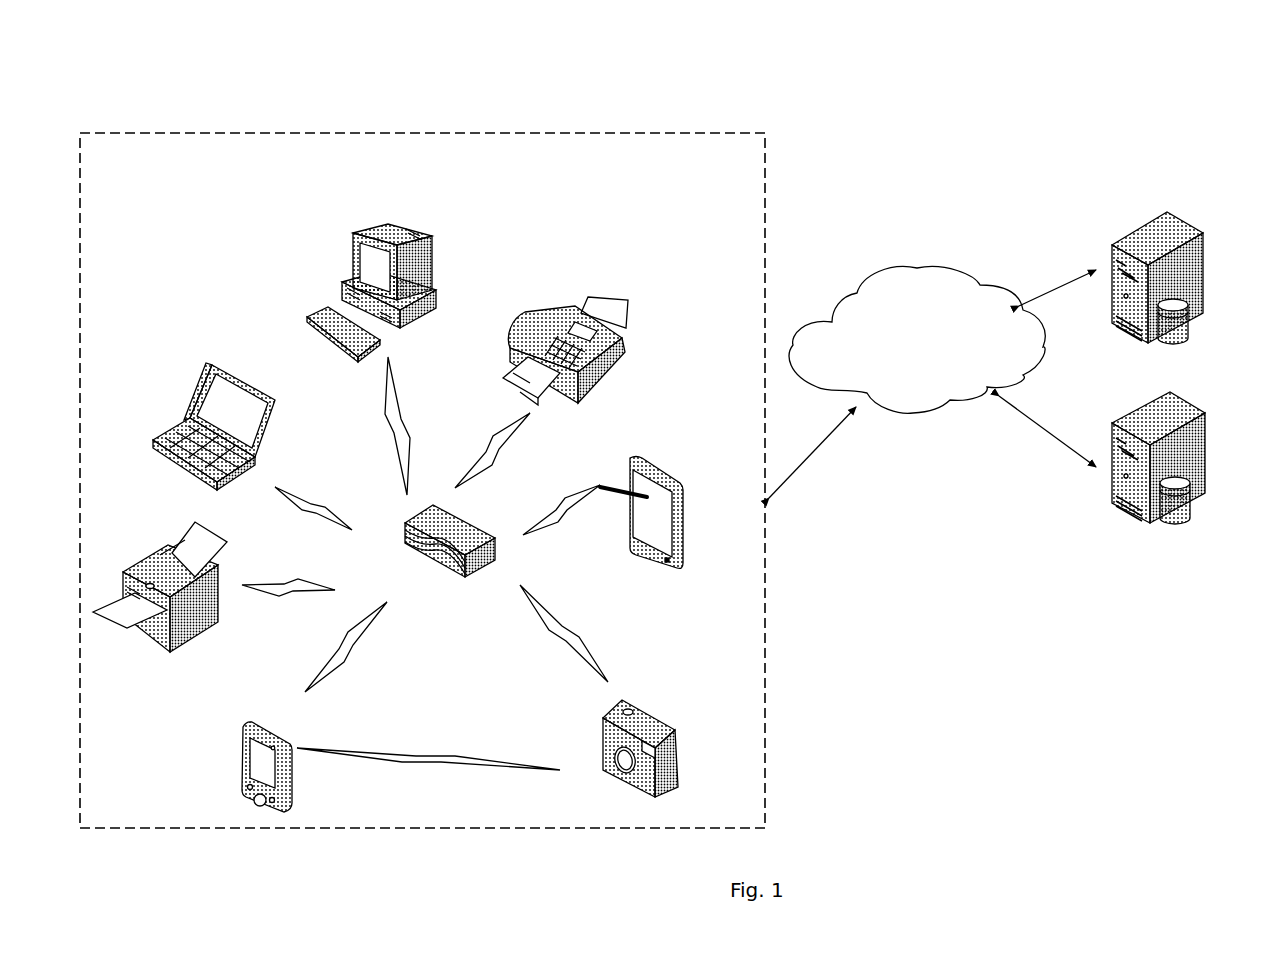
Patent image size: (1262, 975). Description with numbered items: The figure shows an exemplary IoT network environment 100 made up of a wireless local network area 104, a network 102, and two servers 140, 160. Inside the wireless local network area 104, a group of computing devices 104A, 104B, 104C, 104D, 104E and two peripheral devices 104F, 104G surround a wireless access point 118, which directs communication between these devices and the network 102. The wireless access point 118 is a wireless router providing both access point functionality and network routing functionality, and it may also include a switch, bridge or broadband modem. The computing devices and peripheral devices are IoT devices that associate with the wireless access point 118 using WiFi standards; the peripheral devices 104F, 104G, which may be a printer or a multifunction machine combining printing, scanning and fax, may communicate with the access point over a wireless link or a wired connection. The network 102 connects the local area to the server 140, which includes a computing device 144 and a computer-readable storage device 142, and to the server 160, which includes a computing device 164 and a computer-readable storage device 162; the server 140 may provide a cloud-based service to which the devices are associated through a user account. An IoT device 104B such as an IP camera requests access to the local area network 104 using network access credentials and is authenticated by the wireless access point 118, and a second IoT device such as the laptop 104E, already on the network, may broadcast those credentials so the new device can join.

The IoT network environment 100 is at (588, 90).
The network 102 is at (917, 267).
The wireless local network area 104 is at (240, 133).
The computing device 104A is at (235, 722).
The IoT device 104B is at (657, 712).
The computing device 104C is at (665, 467).
The computing device 104D is at (425, 213).
The laptop 104E is at (217, 372).
The peripheral device 104F is at (600, 290).
The peripheral device 104G is at (133, 553).
The wireless access point 118 is at (425, 567).
The server 140 is at (1182, 283).
The computer-readable storage device 142 is at (1173, 345).
The computing device 144 is at (1123, 235).
The server 160 is at (1186, 468).
The computer-readable storage device 162 is at (1188, 525).
The computing device 164 is at (1200, 375).